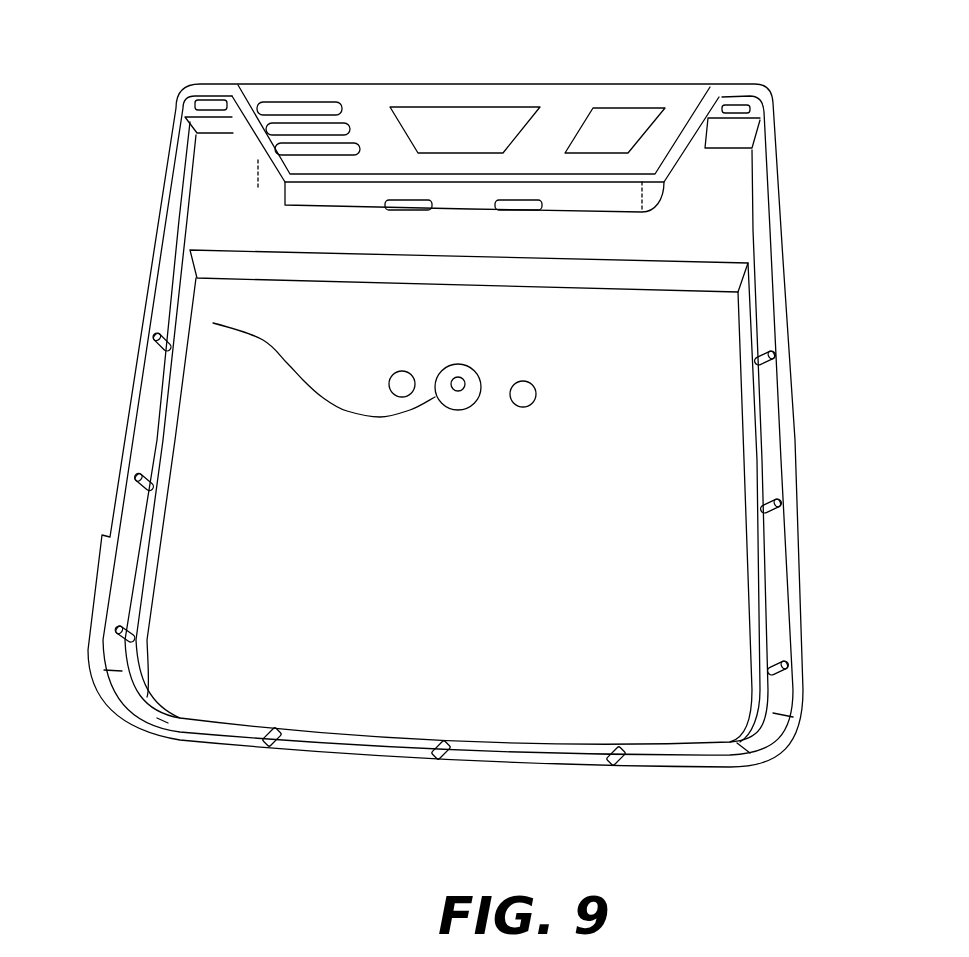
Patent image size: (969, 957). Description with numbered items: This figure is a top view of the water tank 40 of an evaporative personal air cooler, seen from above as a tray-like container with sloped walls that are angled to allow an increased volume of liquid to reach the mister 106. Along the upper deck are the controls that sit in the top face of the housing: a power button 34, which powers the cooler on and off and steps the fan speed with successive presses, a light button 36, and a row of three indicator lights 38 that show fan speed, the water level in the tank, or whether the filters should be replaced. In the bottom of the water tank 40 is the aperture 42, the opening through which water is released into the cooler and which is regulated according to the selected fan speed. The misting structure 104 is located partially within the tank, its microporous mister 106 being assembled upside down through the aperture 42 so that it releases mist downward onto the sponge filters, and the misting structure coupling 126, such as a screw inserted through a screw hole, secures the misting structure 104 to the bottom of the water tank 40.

The power button 34 is at (463, 117).
The light button 36 is at (620, 123).
The indicator light 38 is at (288, 102).
The water tank 40 is at (267, 437).
The aperture 42 is at (213, 323).
The misting structure 104 is at (479, 370).
The mister 106 is at (470, 389).
The misting structure coupling 126 is at (527, 395).